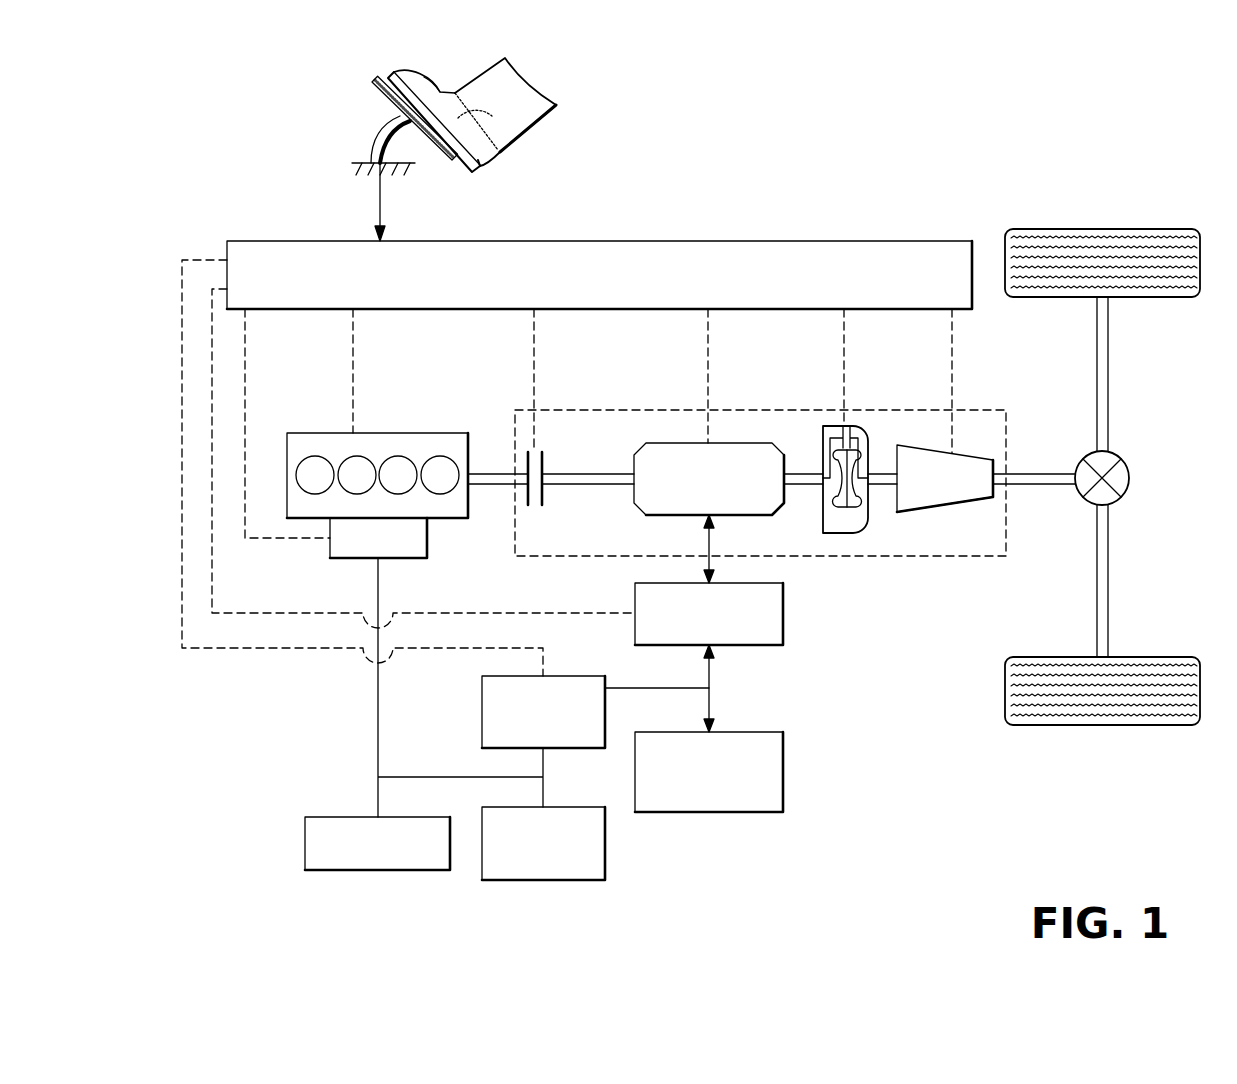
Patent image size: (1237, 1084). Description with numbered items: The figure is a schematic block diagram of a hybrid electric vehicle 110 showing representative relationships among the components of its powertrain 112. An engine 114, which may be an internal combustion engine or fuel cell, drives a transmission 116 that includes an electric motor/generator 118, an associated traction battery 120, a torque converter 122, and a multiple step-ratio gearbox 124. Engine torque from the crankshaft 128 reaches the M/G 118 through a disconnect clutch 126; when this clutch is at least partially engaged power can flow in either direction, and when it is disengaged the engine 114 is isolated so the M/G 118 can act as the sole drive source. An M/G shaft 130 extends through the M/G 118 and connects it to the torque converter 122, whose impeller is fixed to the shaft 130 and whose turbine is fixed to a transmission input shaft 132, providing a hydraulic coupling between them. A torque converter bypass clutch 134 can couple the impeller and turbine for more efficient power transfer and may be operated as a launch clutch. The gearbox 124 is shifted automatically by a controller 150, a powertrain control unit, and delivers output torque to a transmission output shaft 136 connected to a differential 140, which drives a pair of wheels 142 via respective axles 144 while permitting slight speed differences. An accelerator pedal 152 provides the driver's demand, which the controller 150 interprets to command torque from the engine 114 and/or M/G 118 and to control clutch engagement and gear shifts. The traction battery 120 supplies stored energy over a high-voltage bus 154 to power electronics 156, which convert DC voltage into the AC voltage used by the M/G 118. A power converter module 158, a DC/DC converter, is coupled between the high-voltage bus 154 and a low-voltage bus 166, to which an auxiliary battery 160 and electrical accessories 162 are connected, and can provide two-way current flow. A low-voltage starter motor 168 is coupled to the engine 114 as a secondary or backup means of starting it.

The hybrid electric vehicle 110 is at (881, 149).
The powertrain 112 is at (871, 710).
The engine 114 is at (330, 433).
The transmission 116 is at (808, 410).
The electric motor/generator (M/G) 118 is at (685, 443).
The traction battery 120 is at (783, 772).
The torque converter 122 is at (843, 533).
The gearbox 124 is at (937, 512).
The disconnect clutch 126 is at (537, 489).
The crankshaft 128 is at (500, 470).
The M/G shaft 130 is at (592, 474).
The transmission input shaft 132 is at (877, 474).
The torque converter bypass clutch 134 is at (846, 425).
The transmission output shaft 136 is at (1027, 473).
The differential 140 is at (1130, 478).
The wheels 142 is at (1103, 229).
The axles 144 is at (1110, 377).
The controller 150 is at (642, 241).
The accelerator pedal 152 is at (392, 116).
The high-voltage bus 154 is at (712, 700).
The power electronics 156 is at (783, 613).
The power converter module 158 is at (482, 712).
The auxiliary battery 160 is at (605, 843).
The electrical components/accessories 162 is at (305, 843).
The low-voltage bus 166 is at (375, 720).
The low-voltage starter motor 168 is at (427, 538).